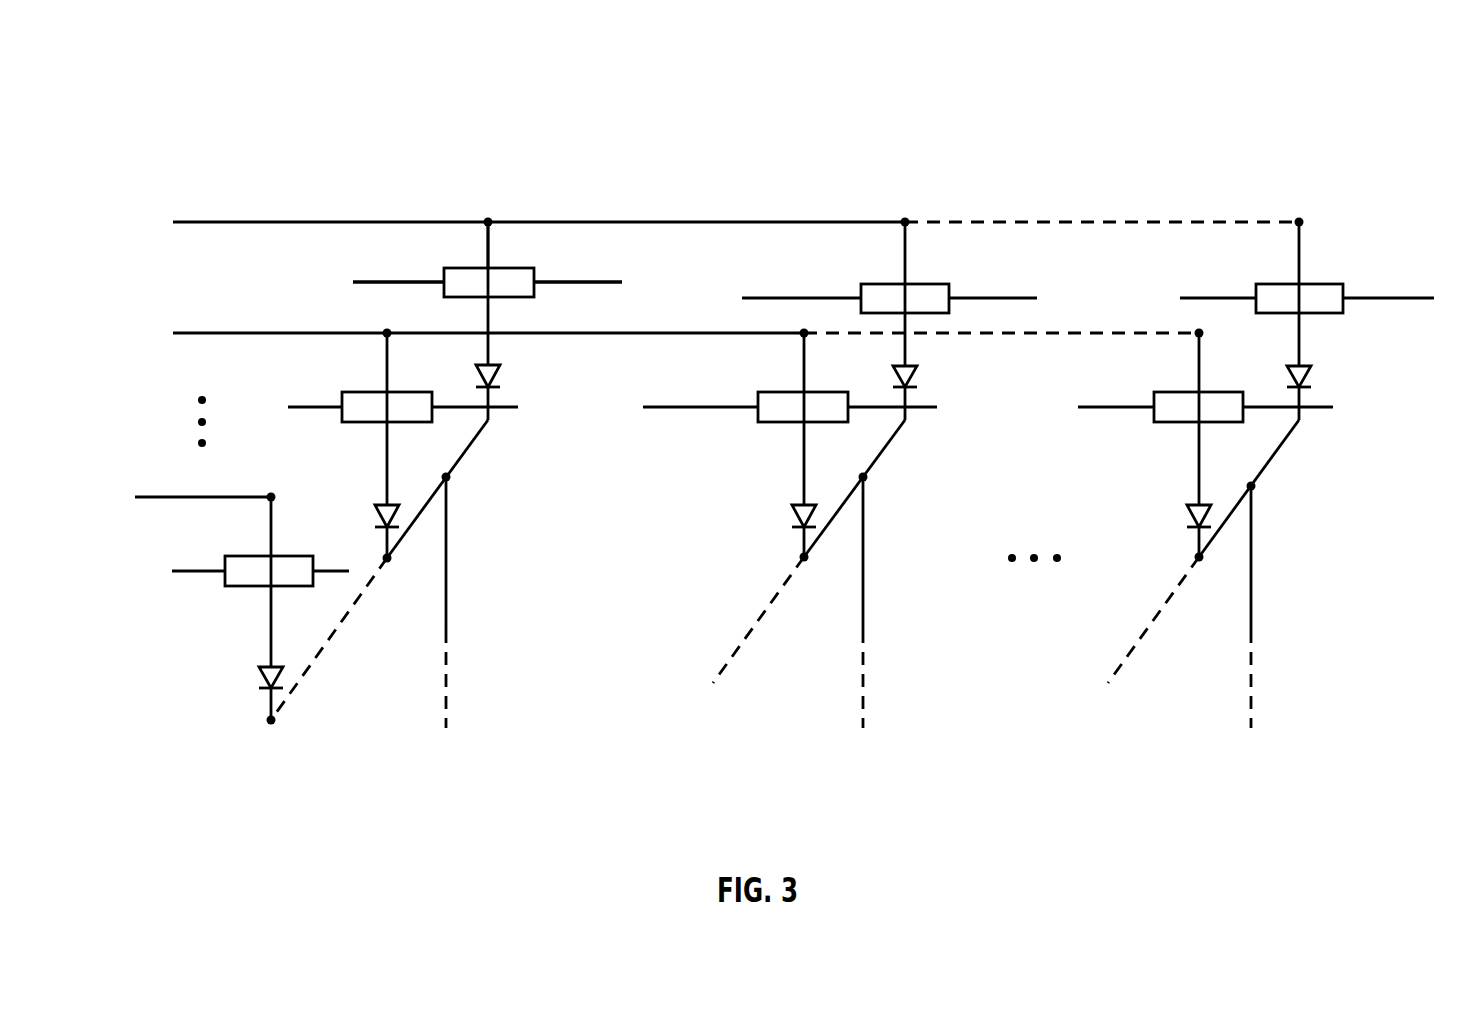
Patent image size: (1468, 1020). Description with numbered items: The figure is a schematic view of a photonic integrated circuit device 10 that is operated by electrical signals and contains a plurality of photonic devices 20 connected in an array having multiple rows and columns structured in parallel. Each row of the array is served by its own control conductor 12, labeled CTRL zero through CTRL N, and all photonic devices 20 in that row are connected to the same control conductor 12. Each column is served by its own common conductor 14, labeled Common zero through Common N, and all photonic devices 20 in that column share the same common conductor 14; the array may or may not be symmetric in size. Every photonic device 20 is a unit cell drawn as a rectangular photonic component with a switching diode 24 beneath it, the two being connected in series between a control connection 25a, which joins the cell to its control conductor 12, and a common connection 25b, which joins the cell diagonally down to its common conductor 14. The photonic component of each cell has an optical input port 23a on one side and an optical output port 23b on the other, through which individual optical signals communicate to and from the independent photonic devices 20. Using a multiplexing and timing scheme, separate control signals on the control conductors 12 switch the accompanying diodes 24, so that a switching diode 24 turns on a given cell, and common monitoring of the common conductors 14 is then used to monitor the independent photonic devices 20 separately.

The photonic integrated circuit (PIC) device 10 is at (158, 78).
The control conductor 12 is at (693, 338).
The common conductor 14 is at (911, 629).
The photonic device 20 is at (605, 263).
The input port 23a is at (418, 285).
The output port 23b is at (567, 286).
The switching diode 24 is at (501, 374).
The control connection 25a is at (493, 227).
The common connection 25b is at (451, 480).